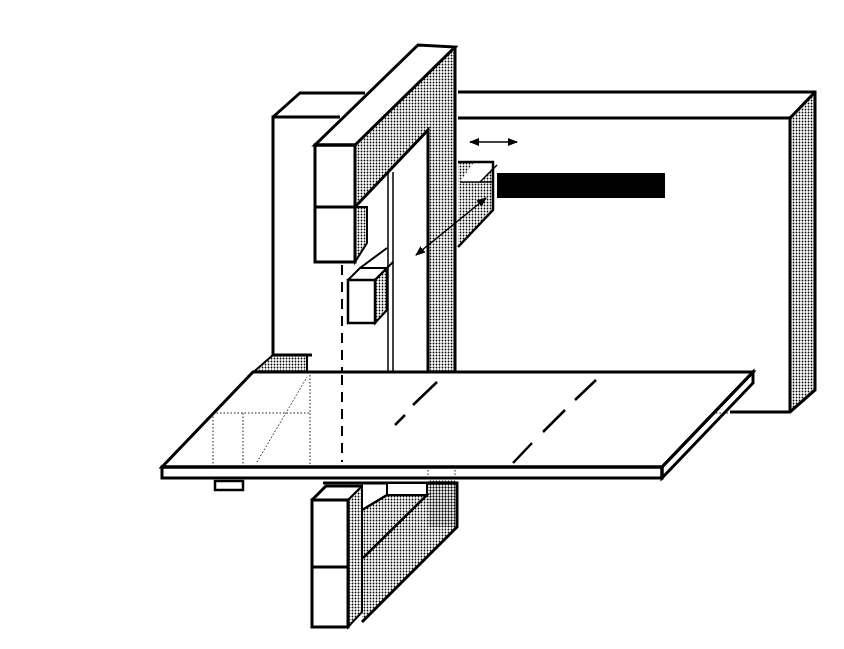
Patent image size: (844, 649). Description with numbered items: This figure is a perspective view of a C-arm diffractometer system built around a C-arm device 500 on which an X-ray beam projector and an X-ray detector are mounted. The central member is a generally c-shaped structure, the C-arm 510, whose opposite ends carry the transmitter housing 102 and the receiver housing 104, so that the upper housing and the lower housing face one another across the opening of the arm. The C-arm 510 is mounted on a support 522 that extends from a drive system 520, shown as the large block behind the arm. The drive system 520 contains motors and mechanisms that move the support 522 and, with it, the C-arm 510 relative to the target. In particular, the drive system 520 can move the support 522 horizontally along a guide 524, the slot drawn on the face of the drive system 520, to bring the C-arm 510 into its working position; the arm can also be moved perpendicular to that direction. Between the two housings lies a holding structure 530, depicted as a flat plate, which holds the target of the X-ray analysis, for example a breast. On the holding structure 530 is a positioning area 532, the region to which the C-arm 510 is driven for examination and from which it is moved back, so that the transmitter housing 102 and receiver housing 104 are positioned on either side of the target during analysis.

The C-arm device 500 is at (193, 56).
The C-arm 510 is at (410, 77).
The drive system 520 is at (720, 92).
The support 522 is at (473, 173).
The guide 524 is at (583, 173).
The transmitter housing 102 is at (328, 255).
The receiver housing 104 is at (320, 528).
The holding structure 530 is at (287, 432).
The positioning area 532 is at (547, 433).